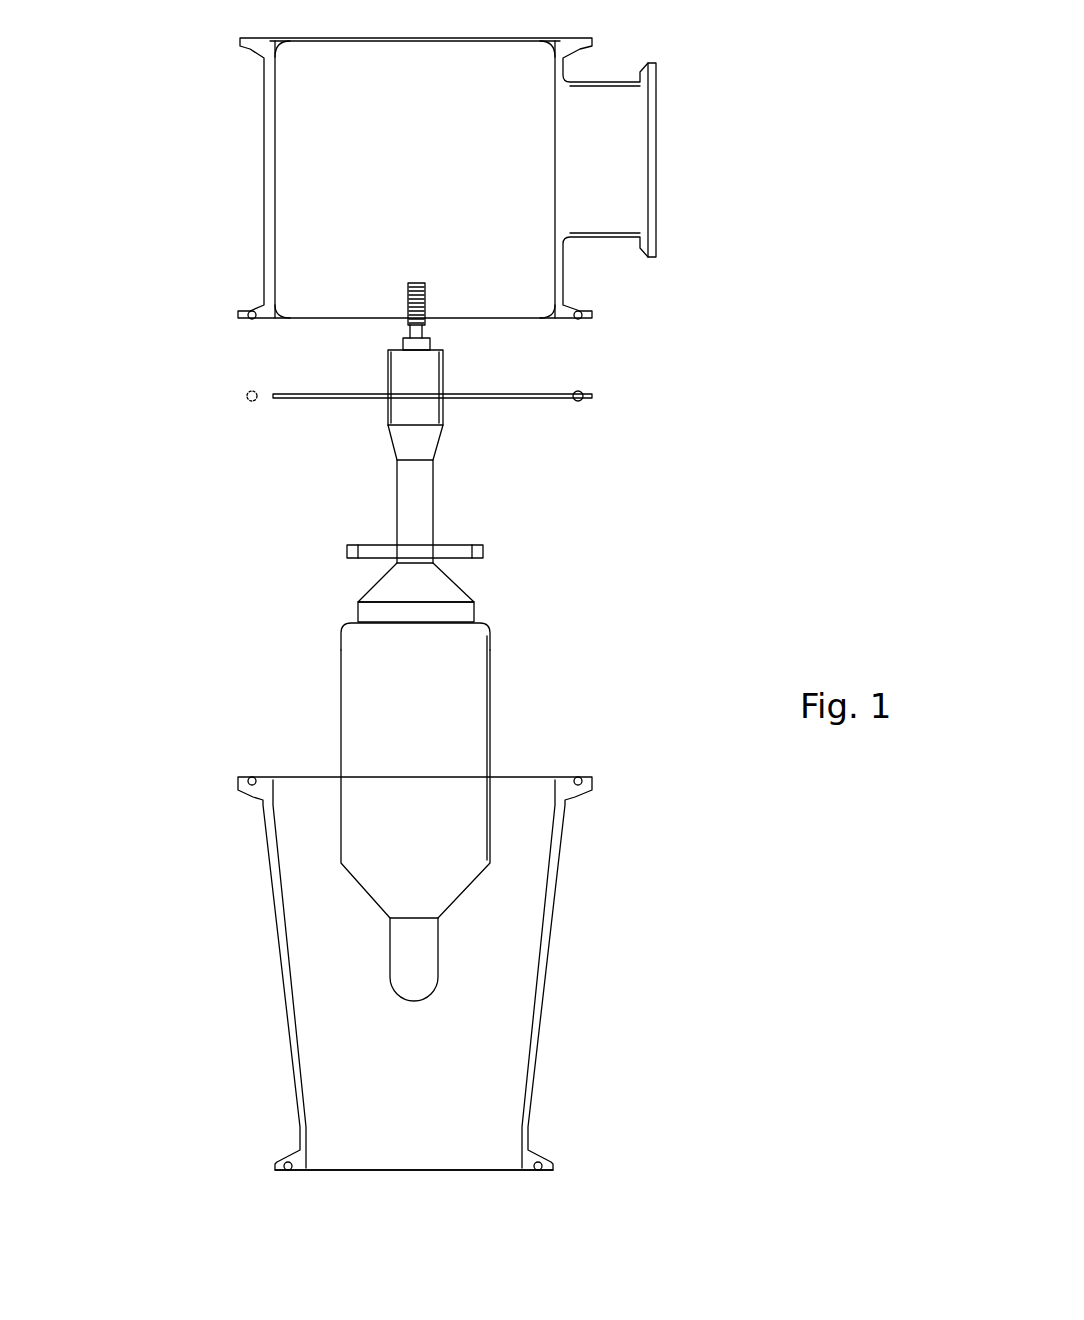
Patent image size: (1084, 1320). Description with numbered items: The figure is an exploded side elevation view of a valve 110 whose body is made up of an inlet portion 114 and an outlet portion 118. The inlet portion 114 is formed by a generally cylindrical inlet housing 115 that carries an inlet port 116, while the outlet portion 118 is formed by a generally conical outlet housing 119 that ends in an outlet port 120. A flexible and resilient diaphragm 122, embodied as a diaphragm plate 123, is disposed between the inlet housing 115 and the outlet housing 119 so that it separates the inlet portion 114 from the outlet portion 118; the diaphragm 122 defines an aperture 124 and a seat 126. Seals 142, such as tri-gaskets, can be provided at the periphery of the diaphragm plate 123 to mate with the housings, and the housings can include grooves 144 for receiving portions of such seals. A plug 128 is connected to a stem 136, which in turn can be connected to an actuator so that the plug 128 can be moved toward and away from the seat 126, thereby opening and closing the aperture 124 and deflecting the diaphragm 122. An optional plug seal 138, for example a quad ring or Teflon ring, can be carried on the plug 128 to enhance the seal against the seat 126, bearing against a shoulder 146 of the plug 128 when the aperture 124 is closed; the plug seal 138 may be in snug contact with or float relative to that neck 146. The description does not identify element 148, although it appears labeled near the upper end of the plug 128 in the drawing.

The valve 110 is at (140, 1093).
The inlet portion 114 is at (265, 198).
The inlet housing 115 is at (272, 90).
The inlet port 116 is at (660, 205).
The outlet portion 118 is at (553, 915).
The outlet housing 119 is at (548, 955).
The outlet port 120 is at (503, 1173).
The diaphragm 122 is at (497, 398).
The diaphragm plate 123 is at (290, 400).
The aperture 124 is at (457, 392).
The seat 126 is at (357, 400).
The plug 128 is at (465, 695).
The stem 136 is at (437, 488).
The plug seal 138 is at (343, 553).
The seals 142 is at (583, 394).
The grooves 144 is at (578, 320).
The shoulder 146 is at (480, 622).
The collar 148 is at (357, 607).